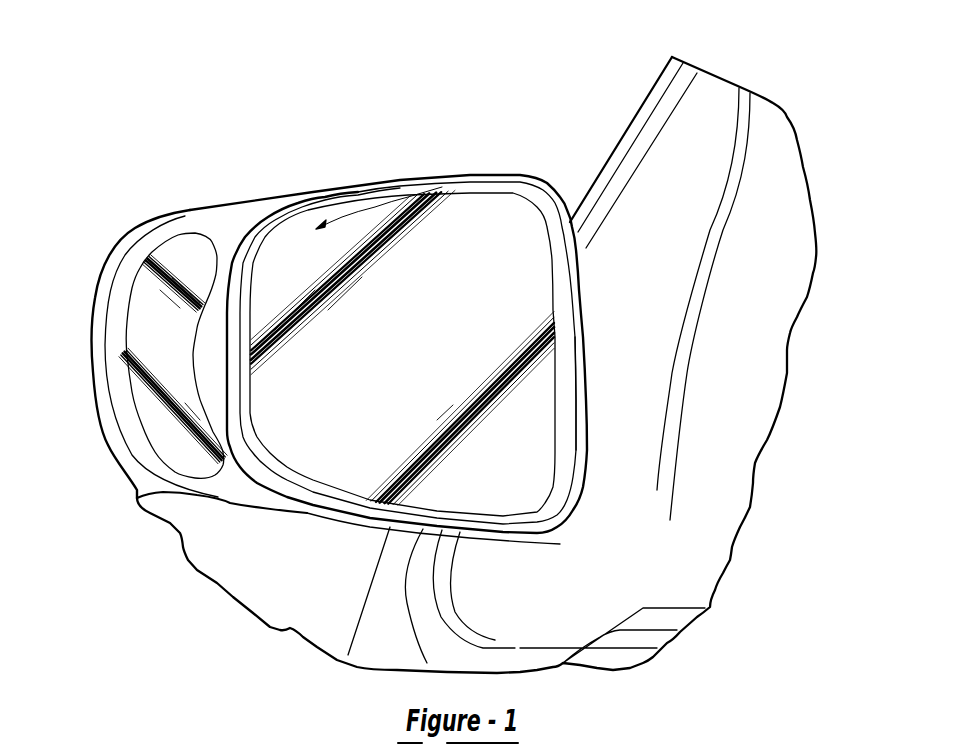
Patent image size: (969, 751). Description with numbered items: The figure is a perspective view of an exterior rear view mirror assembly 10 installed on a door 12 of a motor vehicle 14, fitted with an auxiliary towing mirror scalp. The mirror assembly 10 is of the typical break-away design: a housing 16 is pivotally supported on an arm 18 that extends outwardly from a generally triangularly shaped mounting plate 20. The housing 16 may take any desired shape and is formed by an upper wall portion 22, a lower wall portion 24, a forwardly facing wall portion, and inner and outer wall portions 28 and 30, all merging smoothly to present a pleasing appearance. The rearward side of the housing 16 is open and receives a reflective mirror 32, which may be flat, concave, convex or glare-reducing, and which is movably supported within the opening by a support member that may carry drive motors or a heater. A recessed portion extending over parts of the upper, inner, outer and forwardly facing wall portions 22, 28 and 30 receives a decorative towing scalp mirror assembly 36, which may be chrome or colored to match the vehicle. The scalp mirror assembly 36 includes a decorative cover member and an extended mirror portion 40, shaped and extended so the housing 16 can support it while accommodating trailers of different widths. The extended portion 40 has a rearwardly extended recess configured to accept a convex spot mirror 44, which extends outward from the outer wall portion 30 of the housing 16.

The exterior rear view mirror assembly 10 is at (400, 168).
The door 12 is at (657, 81).
The motor vehicle 14 is at (298, 608).
The housing 16 is at (486, 174).
The arm 18 is at (640, 410).
The mounting plate 20 is at (562, 627).
The upper wall portion 22 is at (352, 212).
The lower wall portion 24 is at (312, 513).
The inner wall portion 28 is at (580, 325).
The outer wall portion 30 is at (237, 430).
The reflective mirror 32 is at (517, 487).
The decorative towing scalp mirror assembly 36 is at (208, 204).
The extended mirror portion 40 is at (106, 369).
The convex spot mirror 44 is at (165, 402).